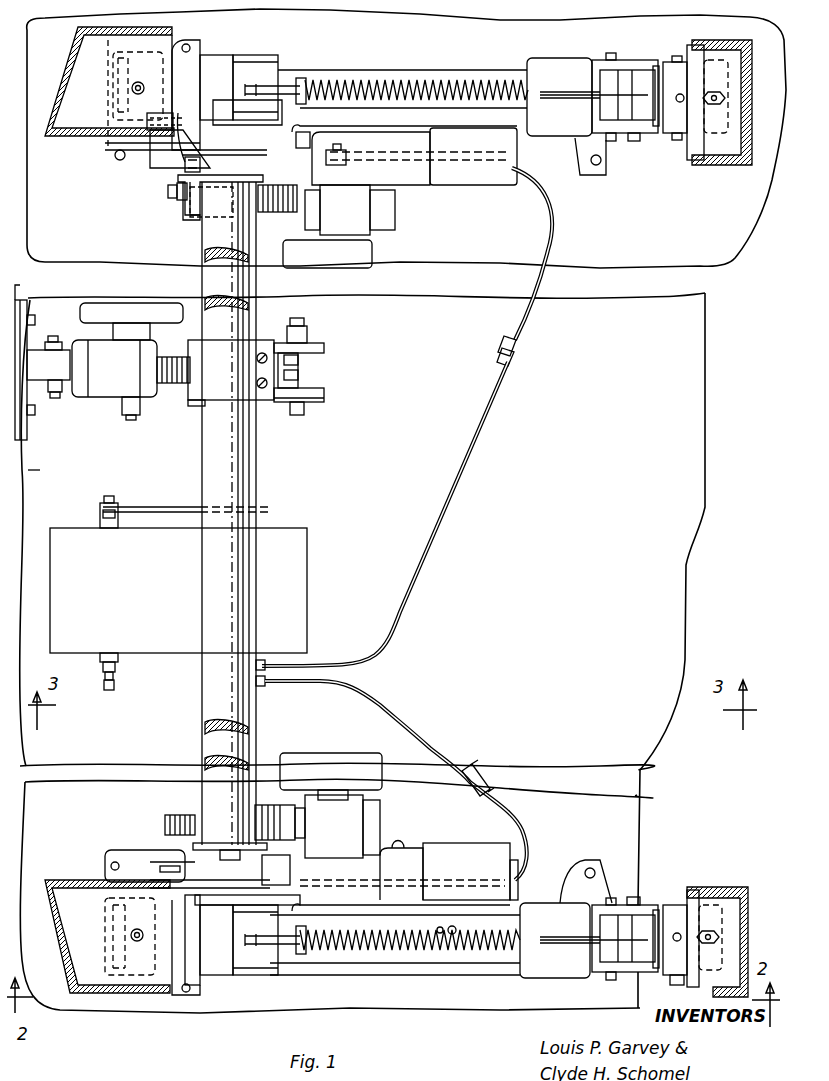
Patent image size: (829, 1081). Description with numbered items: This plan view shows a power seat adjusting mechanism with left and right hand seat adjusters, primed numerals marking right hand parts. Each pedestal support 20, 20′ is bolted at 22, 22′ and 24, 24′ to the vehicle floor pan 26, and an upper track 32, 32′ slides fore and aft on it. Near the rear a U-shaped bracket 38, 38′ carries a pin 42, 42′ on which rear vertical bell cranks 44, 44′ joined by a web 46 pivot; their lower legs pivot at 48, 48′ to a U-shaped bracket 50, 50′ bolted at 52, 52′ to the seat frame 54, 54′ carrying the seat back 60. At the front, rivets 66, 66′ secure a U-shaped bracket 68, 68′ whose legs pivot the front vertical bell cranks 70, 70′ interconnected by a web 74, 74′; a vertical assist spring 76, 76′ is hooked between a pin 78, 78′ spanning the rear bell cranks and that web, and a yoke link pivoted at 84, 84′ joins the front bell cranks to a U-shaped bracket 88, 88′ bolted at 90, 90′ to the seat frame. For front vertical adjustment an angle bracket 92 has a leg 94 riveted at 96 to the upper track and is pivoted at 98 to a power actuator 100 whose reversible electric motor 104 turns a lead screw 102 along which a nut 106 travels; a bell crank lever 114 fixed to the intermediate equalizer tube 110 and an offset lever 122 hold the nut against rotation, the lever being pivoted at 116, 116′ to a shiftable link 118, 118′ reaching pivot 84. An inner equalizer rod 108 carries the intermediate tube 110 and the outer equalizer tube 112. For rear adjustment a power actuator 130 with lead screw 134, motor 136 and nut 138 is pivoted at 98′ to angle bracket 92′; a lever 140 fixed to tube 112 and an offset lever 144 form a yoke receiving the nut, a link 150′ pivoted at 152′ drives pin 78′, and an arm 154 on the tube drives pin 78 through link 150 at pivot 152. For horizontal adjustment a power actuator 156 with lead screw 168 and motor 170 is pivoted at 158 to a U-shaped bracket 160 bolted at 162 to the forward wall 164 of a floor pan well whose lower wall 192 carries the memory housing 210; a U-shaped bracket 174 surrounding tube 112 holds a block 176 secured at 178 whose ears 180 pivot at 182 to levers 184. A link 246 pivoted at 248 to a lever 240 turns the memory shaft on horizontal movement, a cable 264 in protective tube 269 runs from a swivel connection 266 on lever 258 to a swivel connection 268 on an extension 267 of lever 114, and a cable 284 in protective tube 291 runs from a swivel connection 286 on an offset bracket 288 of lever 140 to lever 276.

The pedestal support 20 is at (535, 900).
The pedestal support 20′ is at (515, 48).
The front bolt 22 is at (110, 866).
The front bolt 22′ is at (116, 157).
The rear bolt 24 is at (590, 868).
The rear bolt 24′ is at (596, 166).
The vehicle floor pan 26 is at (705, 293).
The upper track 32 is at (440, 960).
The upper track 32′ is at (435, 70).
The U-shaped bracket 38 is at (582, 968).
The U-shaped bracket 38′ is at (550, 140).
The pin 42 is at (606, 975).
The pin 42′ is at (608, 58).
The rear vertical bell cranks 44 is at (648, 902).
The rear vertical bell cranks 44′ is at (648, 68).
The web 46 is at (660, 925).
The pivot 48 is at (676, 982).
The pivot 48′ is at (680, 142).
The U-shaped bracket 50 is at (686, 962).
The U-shaped bracket 50′ is at (692, 66).
The bolt 52 is at (719, 936).
The bolt 52′ is at (725, 98).
The seat frame 54 is at (740, 892).
The seat frame 54′ is at (68, 82).
The seat back 60 is at (226, 950).
The rivets 66 is at (290, 936).
The rivets 66′ is at (288, 95).
The U-shaped bracket 68 is at (296, 956).
The U-shaped bracket 68′ is at (298, 82).
The front vertical bell cranks 70 is at (250, 965).
The front vertical bell cranks 70′ is at (252, 62).
The web 74 is at (215, 960).
The web 74′ is at (218, 68).
The vertical assist spring 76 is at (560, 940).
The vertical assist spring 76′ is at (378, 82).
The pin 78 is at (630, 898).
The pin 78′ is at (634, 141).
The pivot 84 is at (150, 903).
The pivot 84′ is at (125, 137).
The U-shaped bracket 88 is at (180, 985).
The U-shaped bracket 88′ is at (184, 60).
The bolt 90 is at (131, 936).
The bolt 90′ is at (132, 88).
The angle bracket 92 is at (465, 866).
The angle bracket 92′ is at (470, 170).
The leg 94 is at (440, 925).
The rivets 96 is at (452, 930).
The pivot 98 is at (398, 855).
The pivot 98′ is at (402, 188).
The power actuator 100 is at (355, 808).
The lead screw 102 is at (175, 818).
The reversible electric motor 104 is at (326, 765).
The nut 106 is at (268, 825).
The inner equalizer rod 108 is at (243, 300).
The intermediate equalizer tube 110 is at (215, 305).
The outer equalizer tube 112 is at (210, 693).
The bell crank lever 114 is at (158, 866).
The pivot 116 is at (168, 866).
The pivot 116′ is at (176, 162).
The shiftable link 118 is at (165, 880).
The shiftable link 118′ is at (175, 147).
The offset lever 122 is at (300, 790).
The power actuator 130 is at (328, 212).
The lead screw 134 is at (290, 205).
The reversible electric motor 136 is at (360, 262).
The nut 138 is at (183, 205).
The lever 140 is at (177, 190).
The offset lever 144 is at (198, 212).
The link 150 is at (355, 905).
The shiftable link 150′ is at (355, 126).
The pivot 152 is at (228, 855).
The pivot 152′ is at (300, 140).
The arm 154 is at (222, 843).
The power actuator 156 is at (112, 378).
The pivot 158 is at (54, 342).
The U-shaped bracket 160 is at (24, 412).
The bolt 162 is at (32, 340).
The forward wall 164 is at (26, 268).
The lead screw 168 is at (175, 384).
The reversible electric motor 170 is at (105, 320).
The U-shaped bracket 174 is at (205, 395).
The block 176 is at (282, 372).
The fastener 178 is at (262, 383).
The ears 180 is at (315, 345).
The pivot 182 is at (300, 335).
The levers 184 is at (320, 372).
The lower wall 192 is at (62, 472).
The housing 210 is at (288, 538).
The lever 240 is at (102, 516).
The link 246 is at (148, 506).
The pivot 248 is at (108, 503).
The lever 258 is at (106, 672).
The cable 264 is at (400, 722).
The swivel connection 266 is at (112, 685).
The extension 267 is at (268, 890).
The swivel connection 268 is at (300, 898).
The protective tube 269 is at (420, 740).
The lever 276 is at (106, 658).
The cable 284 is at (535, 272).
The swivel connection 286 is at (180, 113).
The offset bracket 288 is at (186, 166).
The protective tube 291 is at (465, 455).